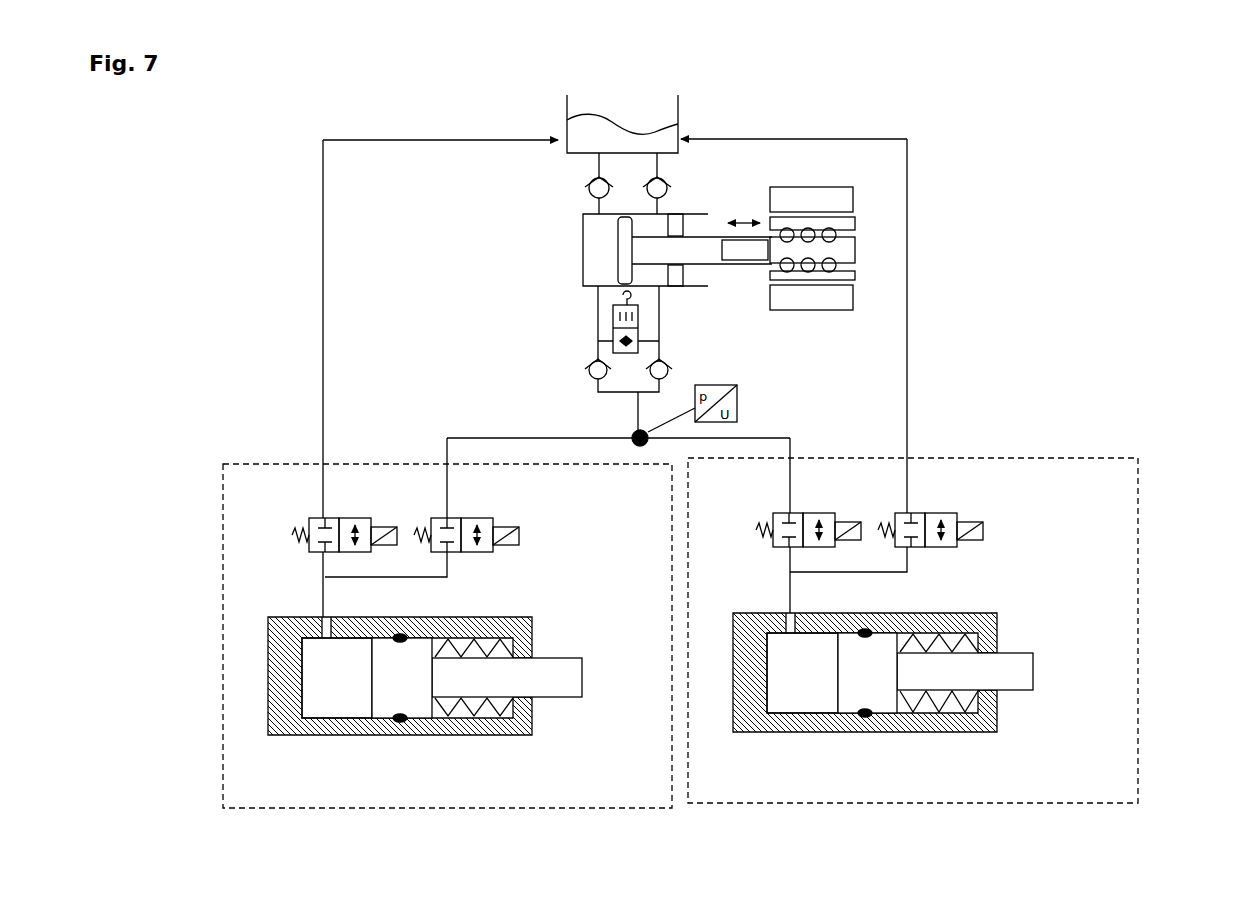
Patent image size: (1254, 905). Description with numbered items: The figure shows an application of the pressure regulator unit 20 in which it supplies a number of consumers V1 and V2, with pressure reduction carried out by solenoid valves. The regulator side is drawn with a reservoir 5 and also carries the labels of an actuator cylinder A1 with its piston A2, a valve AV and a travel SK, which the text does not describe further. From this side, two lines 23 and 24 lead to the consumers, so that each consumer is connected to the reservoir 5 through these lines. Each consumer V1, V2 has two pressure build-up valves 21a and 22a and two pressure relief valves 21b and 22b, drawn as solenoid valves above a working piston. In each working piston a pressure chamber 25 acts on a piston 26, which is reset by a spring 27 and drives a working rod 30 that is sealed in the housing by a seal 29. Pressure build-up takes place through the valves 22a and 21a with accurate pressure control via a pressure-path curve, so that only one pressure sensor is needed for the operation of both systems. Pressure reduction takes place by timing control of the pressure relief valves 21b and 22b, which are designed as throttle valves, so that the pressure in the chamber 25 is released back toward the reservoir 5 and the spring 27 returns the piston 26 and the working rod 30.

The fluid reservoir 5 is at (567, 125).
The pressure regulator unit 20 is at (843, 175).
The line 23 is at (323, 320).
The line 24 is at (907, 317).
The master cylinder A1 is at (583, 247).
The master cylinder piston A2 is at (634, 270).
The shut-off valve AV is at (638, 328).
The clutch travel SK is at (744, 211).
The pressure relief valve 22b is at (325, 527).
The pressure build-up valve 22a is at (432, 520).
The pressure build-up valve 21a is at (807, 512).
The pressure relief valve 21b is at (920, 512).
The pressure chamber 25 is at (330, 700).
The piston 26 is at (380, 696).
The spring 27 is at (487, 700).
The seal 29 is at (408, 718).
The working rod 30 is at (560, 683).
The consumer V1 is at (227, 597).
The consumer V2 is at (1138, 575).